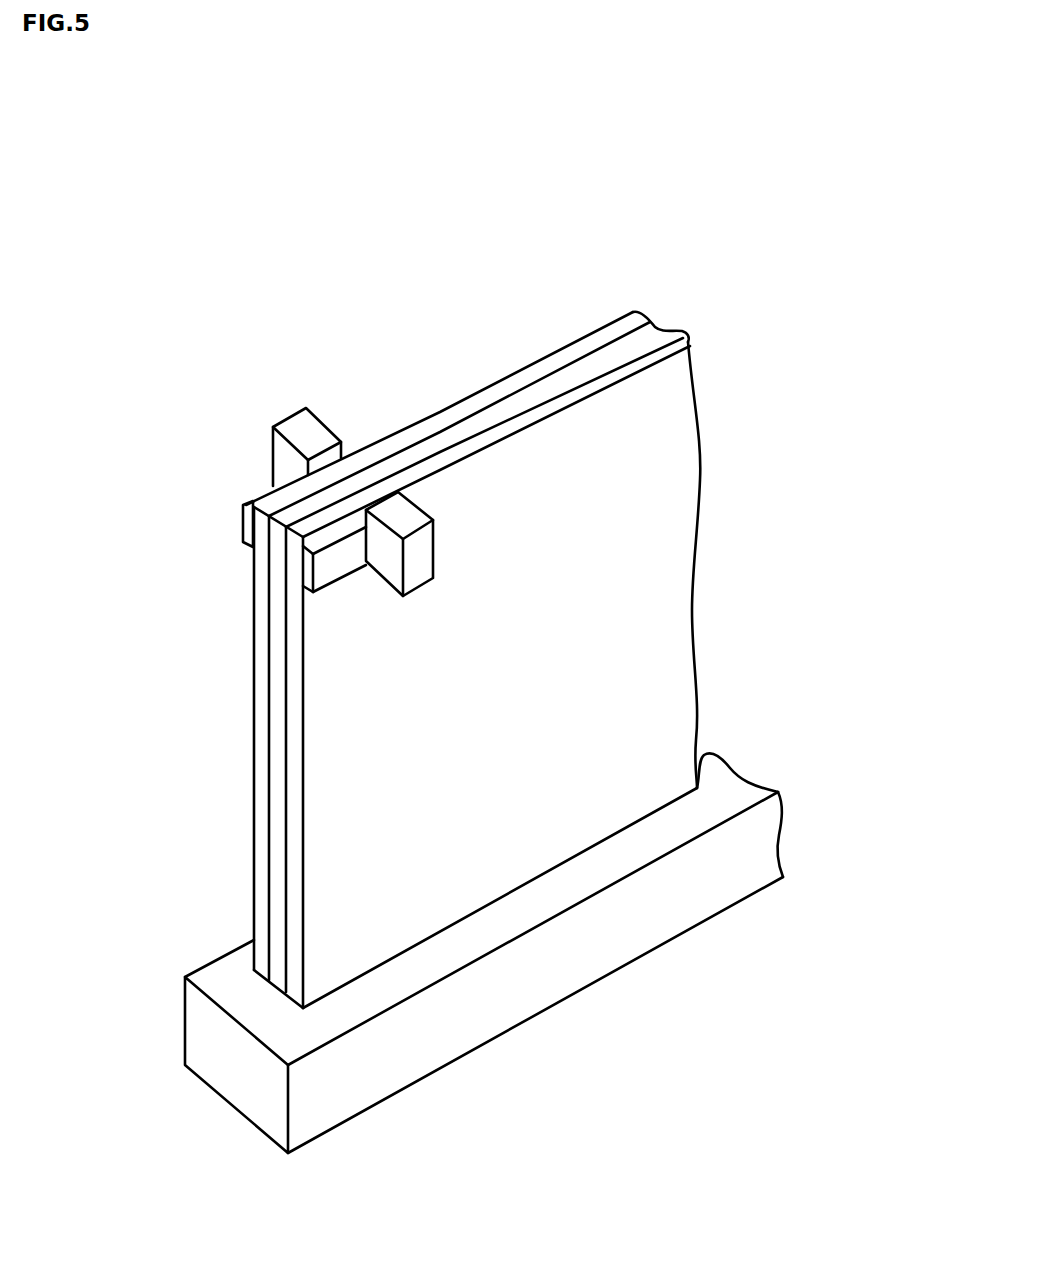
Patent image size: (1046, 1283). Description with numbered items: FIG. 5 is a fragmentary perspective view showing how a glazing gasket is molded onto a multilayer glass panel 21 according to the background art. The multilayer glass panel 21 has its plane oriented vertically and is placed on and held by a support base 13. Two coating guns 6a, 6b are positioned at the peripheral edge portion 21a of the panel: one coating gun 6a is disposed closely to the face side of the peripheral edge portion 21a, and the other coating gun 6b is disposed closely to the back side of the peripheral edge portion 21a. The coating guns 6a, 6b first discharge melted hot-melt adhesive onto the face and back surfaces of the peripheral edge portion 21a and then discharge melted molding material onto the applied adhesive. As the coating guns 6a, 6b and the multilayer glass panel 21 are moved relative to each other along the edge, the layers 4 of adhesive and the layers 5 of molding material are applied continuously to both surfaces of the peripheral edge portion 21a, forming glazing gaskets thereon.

The layer of melted hot-melt adhesive 4 is at (345, 522).
The layer of melted molding material 5 is at (256, 490).
The coating gun 6a is at (322, 425).
The coating gun 6b is at (417, 507).
The support base 13 is at (650, 950).
The multilayer glass panel 21 is at (538, 358).
The peripheral edge portion 21a is at (507, 463).